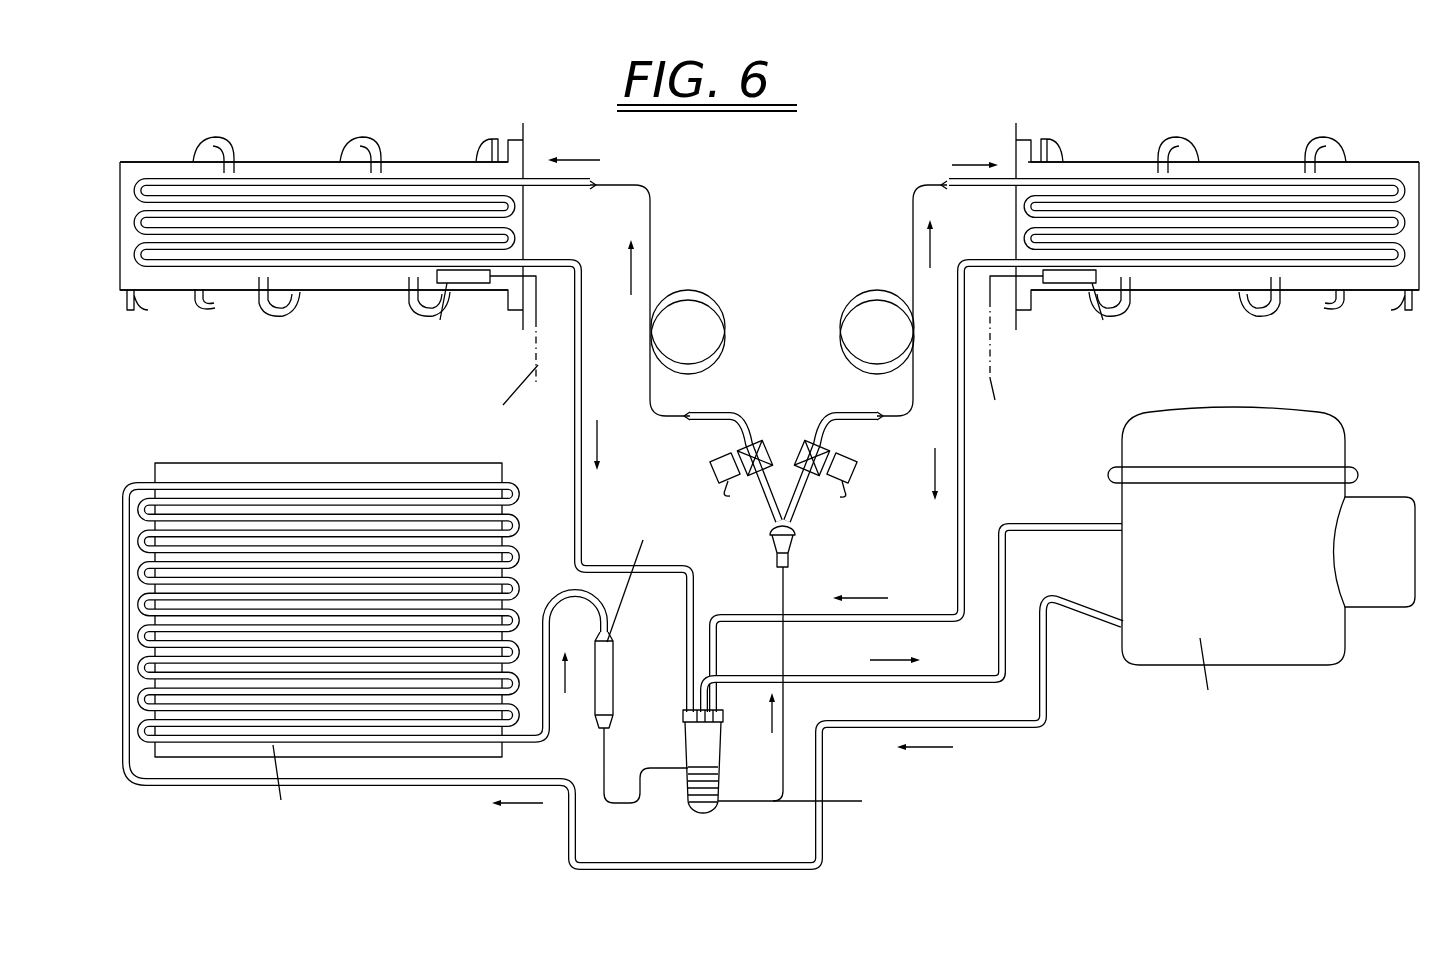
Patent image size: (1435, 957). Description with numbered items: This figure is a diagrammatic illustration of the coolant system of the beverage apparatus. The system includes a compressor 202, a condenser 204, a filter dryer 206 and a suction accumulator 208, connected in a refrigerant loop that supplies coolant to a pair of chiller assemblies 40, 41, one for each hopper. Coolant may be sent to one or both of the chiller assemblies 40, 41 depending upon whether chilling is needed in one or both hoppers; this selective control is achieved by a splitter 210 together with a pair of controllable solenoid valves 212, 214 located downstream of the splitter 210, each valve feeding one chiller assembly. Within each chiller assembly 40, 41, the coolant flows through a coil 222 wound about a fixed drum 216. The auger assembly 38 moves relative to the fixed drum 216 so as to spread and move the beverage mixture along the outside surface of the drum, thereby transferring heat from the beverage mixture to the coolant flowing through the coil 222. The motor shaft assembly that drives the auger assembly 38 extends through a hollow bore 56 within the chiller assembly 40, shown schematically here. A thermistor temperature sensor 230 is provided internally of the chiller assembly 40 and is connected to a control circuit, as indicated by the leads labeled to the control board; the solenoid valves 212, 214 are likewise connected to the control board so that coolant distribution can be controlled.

The auger assembly 38 is at (227, 140).
The chiller assembly 40 is at (355, 216).
The chiller assembly 41 is at (1254, 154).
The hollow bore 56 is at (227, 283).
The compressor 202 is at (1325, 638).
The condenser 204 is at (365, 649).
The filter dryer 206 is at (614, 688).
The suction accumulator 208 is at (752, 753).
The splitter 210 is at (822, 545).
The solenoid valve 212 is at (721, 452).
The solenoid valve 214 is at (847, 458).
The fixed drum 216 is at (412, 162).
The coil 222 is at (170, 178).
The thermistor temperature sensor 230 is at (477, 283).